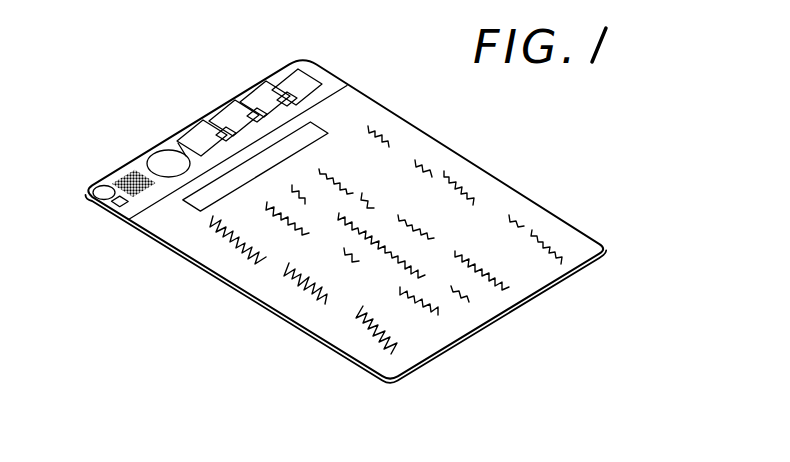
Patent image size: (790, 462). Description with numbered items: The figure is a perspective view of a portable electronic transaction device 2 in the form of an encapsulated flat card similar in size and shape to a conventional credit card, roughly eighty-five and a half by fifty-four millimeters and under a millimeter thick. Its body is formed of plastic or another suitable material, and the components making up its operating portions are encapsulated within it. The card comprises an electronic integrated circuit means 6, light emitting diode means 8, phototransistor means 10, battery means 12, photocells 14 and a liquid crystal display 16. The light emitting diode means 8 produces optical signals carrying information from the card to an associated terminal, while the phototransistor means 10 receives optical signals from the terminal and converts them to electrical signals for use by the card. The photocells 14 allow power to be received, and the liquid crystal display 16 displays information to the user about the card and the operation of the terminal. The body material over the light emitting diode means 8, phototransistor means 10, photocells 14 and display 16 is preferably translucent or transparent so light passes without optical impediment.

The portable electronic transaction device 2 is at (524, 182).
The integrated circuit means 6 is at (123, 171).
The light emitting diode means 8 is at (100, 194).
The phototransistor means 10 is at (118, 208).
The battery means 12 is at (168, 157).
The photocells 14 is at (295, 78).
The liquid crystal display 16 is at (299, 142).